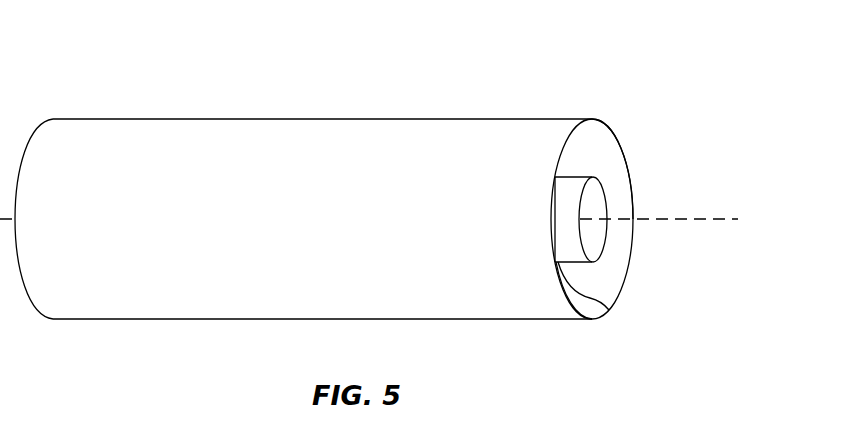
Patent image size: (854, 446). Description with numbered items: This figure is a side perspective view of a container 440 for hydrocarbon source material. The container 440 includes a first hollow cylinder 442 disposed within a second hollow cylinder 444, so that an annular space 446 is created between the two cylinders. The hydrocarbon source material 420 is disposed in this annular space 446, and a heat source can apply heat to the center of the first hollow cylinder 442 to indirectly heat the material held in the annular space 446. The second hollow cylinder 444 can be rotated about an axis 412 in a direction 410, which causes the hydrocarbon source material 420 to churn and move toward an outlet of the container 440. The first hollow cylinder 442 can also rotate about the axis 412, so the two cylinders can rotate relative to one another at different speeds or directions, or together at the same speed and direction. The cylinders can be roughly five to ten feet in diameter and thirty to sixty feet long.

The container 440 is at (262, 54).
The direction 410 is at (628, 112).
The second hollow cylinder 444 is at (620, 142).
The first hollow cylinder 442 is at (605, 200).
The axis 412 is at (726, 218).
The annular space 446 is at (610, 272).
The hydrocarbon source material 420 is at (595, 298).